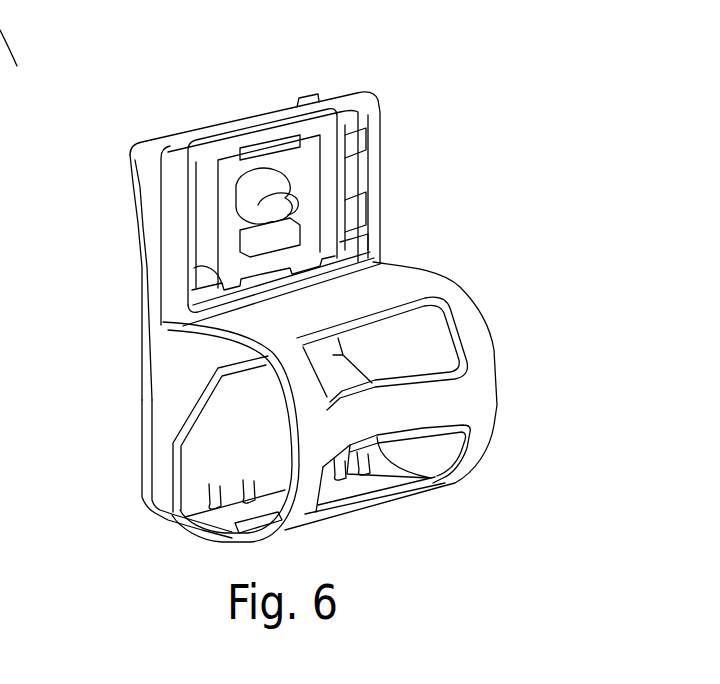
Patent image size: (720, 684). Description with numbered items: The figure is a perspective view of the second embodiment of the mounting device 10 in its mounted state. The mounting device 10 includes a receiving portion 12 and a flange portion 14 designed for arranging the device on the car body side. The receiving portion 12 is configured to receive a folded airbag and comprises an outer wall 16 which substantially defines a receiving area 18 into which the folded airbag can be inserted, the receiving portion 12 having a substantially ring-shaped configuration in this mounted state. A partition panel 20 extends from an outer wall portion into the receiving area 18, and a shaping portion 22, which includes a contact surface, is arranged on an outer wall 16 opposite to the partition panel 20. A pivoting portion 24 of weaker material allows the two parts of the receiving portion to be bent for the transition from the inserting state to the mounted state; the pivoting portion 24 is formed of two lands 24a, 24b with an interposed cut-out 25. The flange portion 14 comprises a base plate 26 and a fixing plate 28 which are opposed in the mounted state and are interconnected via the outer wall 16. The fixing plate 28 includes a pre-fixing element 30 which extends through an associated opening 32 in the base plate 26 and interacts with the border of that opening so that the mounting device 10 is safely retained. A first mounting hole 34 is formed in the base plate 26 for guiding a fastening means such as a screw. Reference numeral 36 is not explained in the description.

The mounting device 10 is at (389, 116).
The receiving portion 12 is at (134, 503).
The flange portion 14 is at (116, 218).
The outer wall 16 is at (407, 285).
The receiving area 18 is at (264, 446).
The partition panel 20 is at (202, 402).
The shaping portion 22 is at (437, 400).
The pivoting portion 24 is at (18, 62).
The land 24a is at (443, 477).
The land 24b is at (228, 538).
The cut-out 25 is at (358, 505).
The base plate 26 is at (332, 96).
The fixing plate 28 is at (147, 160).
The pre-fixing element 30 is at (188, 270).
The opening 32 is at (201, 250).
The first mounting hole 34 is at (258, 205).
The detent 36 is at (244, 192).